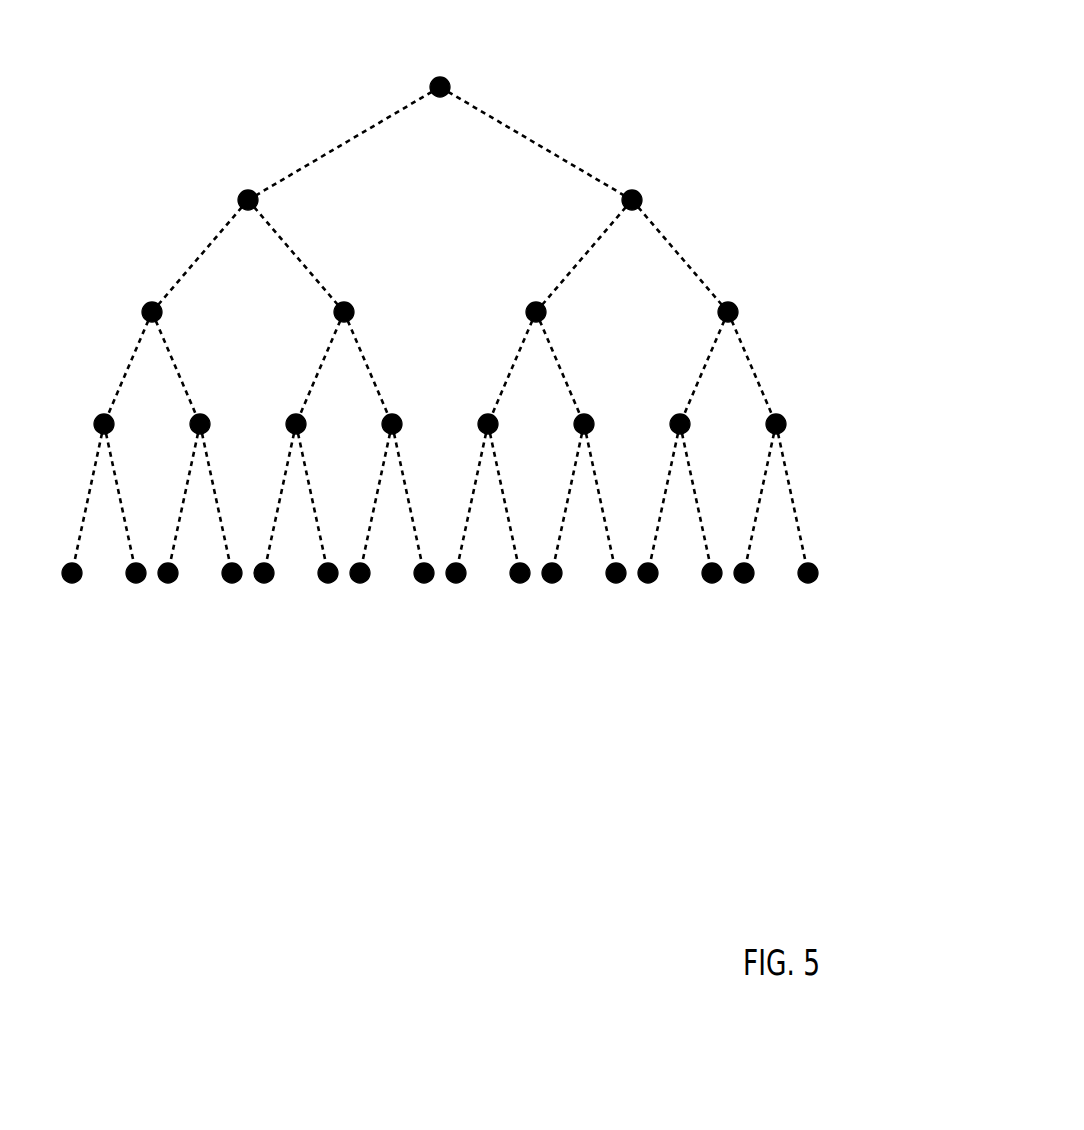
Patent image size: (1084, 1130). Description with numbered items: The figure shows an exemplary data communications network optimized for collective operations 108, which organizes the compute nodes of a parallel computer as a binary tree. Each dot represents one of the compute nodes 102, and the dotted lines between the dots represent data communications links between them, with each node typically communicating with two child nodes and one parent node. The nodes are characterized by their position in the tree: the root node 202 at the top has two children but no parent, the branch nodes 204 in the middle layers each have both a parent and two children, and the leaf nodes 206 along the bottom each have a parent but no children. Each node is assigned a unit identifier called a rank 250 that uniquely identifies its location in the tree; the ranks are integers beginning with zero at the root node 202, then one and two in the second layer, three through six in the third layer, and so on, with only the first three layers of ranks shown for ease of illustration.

The data communications network optimized for collective operations 108 is at (500, 420).
The root node 202 is at (474, 71).
The branch nodes 204 is at (832, 148).
The leaf nodes 206 is at (832, 610).
The rank 250 is at (576, 211).
The compute nodes 102 is at (763, 733).